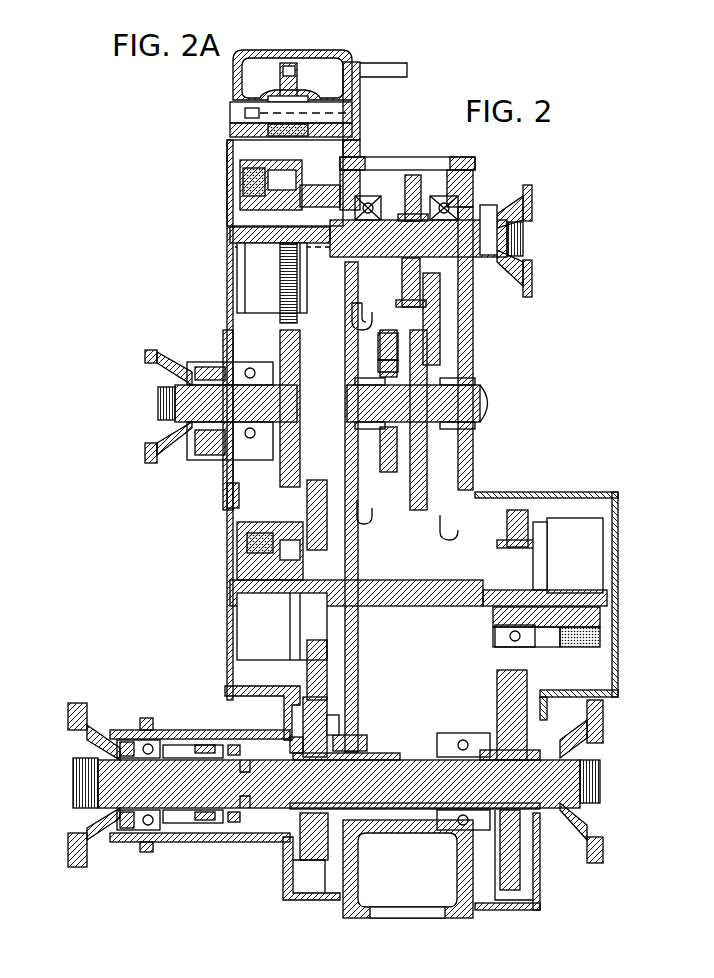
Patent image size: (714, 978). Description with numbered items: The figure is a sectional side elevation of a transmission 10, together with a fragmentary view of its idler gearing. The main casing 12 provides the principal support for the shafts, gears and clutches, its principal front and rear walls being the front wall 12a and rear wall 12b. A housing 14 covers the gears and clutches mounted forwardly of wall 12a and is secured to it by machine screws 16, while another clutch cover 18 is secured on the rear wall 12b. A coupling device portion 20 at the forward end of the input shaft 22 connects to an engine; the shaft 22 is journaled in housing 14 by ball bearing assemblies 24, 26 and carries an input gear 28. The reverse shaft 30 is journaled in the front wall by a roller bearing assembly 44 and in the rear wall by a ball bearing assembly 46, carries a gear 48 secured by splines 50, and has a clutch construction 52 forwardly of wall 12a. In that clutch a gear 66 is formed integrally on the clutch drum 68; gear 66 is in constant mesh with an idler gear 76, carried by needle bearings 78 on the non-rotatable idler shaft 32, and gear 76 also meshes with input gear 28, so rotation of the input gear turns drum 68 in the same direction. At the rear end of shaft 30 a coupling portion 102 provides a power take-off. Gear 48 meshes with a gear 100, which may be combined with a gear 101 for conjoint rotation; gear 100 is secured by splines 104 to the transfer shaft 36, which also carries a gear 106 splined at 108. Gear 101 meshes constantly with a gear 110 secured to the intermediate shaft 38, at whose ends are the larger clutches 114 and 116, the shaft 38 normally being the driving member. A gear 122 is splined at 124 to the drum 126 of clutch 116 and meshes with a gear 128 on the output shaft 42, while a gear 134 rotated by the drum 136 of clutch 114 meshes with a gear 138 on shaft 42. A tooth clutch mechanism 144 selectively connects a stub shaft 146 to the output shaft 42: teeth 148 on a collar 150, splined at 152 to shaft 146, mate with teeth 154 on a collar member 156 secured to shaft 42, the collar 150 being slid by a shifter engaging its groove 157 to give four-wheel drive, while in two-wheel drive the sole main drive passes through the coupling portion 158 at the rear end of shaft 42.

In FIG. 2, the transmission 10 is at (424, 121).
In FIG. 2, the main casing 12 is at (468, 158).
In FIG. 2, the front wall 12a is at (345, 343).
In FIG. 2, the rear wall 12b is at (475, 321).
In FIG. 2, the housing 14 is at (228, 352).
In FIG. 2, the machine screws 16 is at (347, 158).
In FIG. 2, the clutch cover 18 is at (592, 493).
In FIG. 2, the coupling device portion 20 is at (152, 446).
In FIG. 2, the input shaft 22 is at (183, 403).
In FIG. 2, the ball bearing assembly 24 is at (215, 428).
In FIG. 2, the ball bearing assembly 26 is at (258, 452).
In FIG. 2, the input gear 28 is at (298, 440).
In FIG. 2, the reverse shaft 30 is at (525, 240).
In FIG. 2A, the idler shaft 32 is at (236, 114).
In FIG. 2, the transfer shaft 36 is at (482, 402).
In FIG. 2, the intermediate shaft 38 is at (393, 608).
In FIG. 2, the output shaft 42 is at (404, 812).
In FIG. 2, the roller bearing assembly 44 is at (375, 193).
In FIG. 2, the ball bearing assembly 46 is at (443, 196).
In FIG. 2, the gear 48 is at (413, 176).
In FIG. 2, the splines 50 is at (395, 233).
In FIG. 2, the clutch construction 52 is at (242, 166).
In FIG. 2, the gear 66 is at (284, 296).
In FIG. 2, the clutch drum 68 is at (242, 263).
In FIG. 2A, the idler gear 76 is at (289, 64).
In FIG. 2A, the needle bearings 78 is at (280, 92).
In FIG. 2, the gear 100 is at (404, 300).
In FIG. 2, the gear 101 is at (440, 287).
In FIG. 2, the coupling portion 102 is at (530, 192).
In FIG. 2, the splines 104 is at (420, 385).
In FIG. 2, the gear 106 is at (386, 333).
In FIG. 2, the splines 108 is at (372, 403).
In FIG. 2, the gear 110 is at (410, 550).
In FIG. 2, the clutch 114 is at (228, 530).
In FIG. 2, the clutch 116 is at (606, 632).
In FIG. 2, the gear 122 is at (520, 510).
In FIG. 2, the splines 124 is at (515, 650).
In FIG. 2, the drum 126 is at (592, 553).
In FIG. 2, the gear 128 is at (513, 718).
In FIG. 2, the gear 134 is at (307, 673).
In FIG. 2, the drum 136 is at (250, 630).
In FIG. 2, the gear 138 is at (352, 706).
In FIG. 2, the tooth clutch mechanism 144 is at (240, 835).
In FIG. 2, the stub shaft 146 is at (72, 784).
In FIG. 2, the teeth 148 is at (220, 748).
In FIG. 2, the collar 150 is at (192, 750).
In FIG. 2, the splines 152 is at (210, 770).
In FIG. 2, the teeth 154 is at (222, 820).
In FIG. 2, the collar member 156 is at (245, 822).
In FIG. 2, the groove 157 is at (195, 822).
In FIG. 2, the coupling portion 158 is at (598, 842).